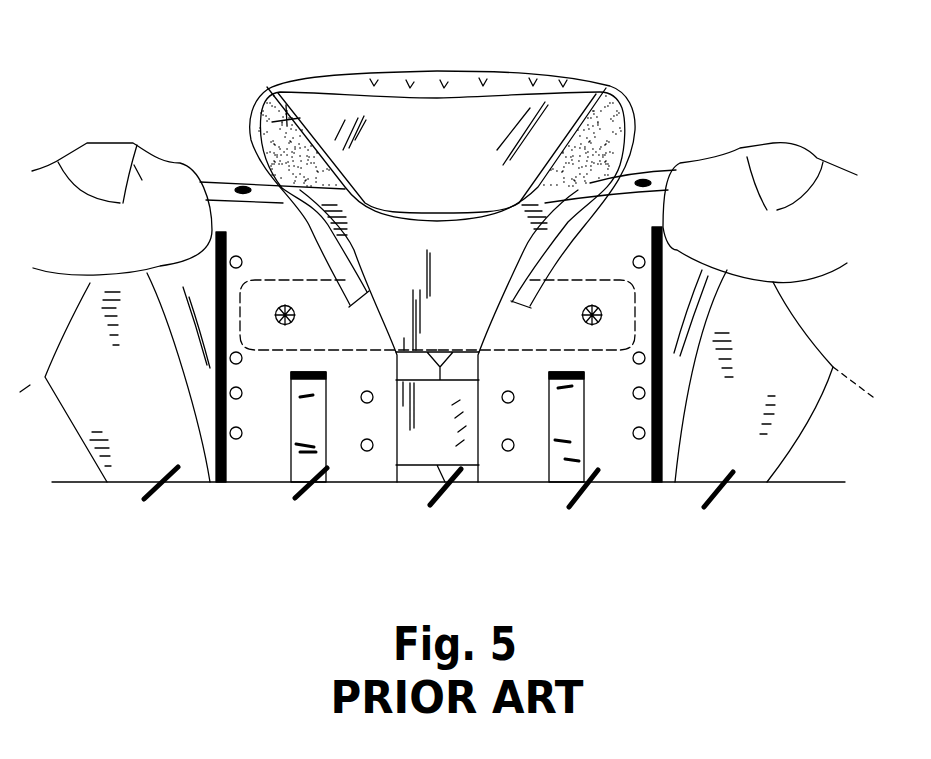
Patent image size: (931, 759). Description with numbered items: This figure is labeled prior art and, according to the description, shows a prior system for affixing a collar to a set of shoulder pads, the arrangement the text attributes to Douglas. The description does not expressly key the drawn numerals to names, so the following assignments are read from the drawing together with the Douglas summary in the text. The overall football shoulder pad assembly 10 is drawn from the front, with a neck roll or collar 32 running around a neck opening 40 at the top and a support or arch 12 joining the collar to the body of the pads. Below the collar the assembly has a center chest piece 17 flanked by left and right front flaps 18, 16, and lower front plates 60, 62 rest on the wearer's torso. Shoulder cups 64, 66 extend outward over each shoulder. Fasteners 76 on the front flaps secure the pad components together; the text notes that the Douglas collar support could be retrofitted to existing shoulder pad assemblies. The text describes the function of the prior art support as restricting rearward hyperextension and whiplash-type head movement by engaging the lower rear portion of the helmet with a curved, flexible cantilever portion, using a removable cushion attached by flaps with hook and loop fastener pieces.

The shoulder pad assembly 10 is at (599, 70).
The shoulder arch 12 is at (618, 173).
The right front flap 16 is at (588, 278).
The center chest piece 17 is at (439, 336).
The left front flap 18 is at (285, 278).
The neck collar roll 32 is at (418, 72).
The neck opening 40 is at (477, 205).
The left chest plate 60 is at (260, 467).
The right chest plate 62 is at (614, 466).
The left shoulder cup 64 is at (220, 203).
The right shoulder cup 66 is at (708, 160).
The fastener 76 is at (294, 310).